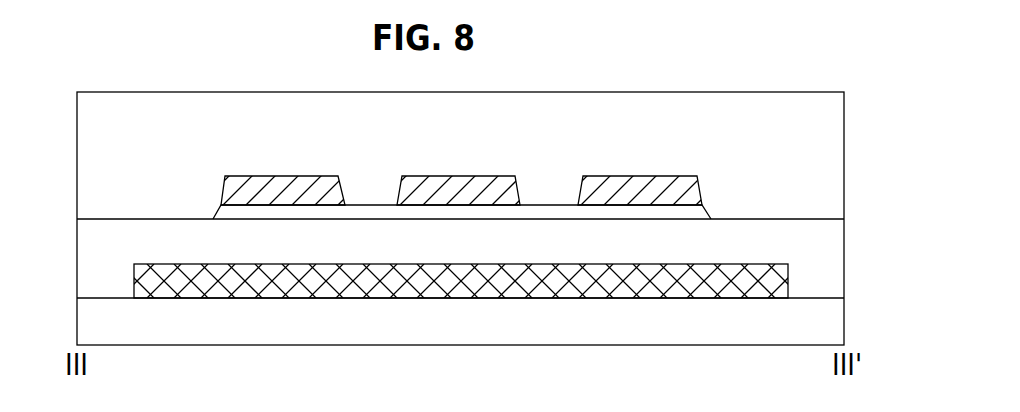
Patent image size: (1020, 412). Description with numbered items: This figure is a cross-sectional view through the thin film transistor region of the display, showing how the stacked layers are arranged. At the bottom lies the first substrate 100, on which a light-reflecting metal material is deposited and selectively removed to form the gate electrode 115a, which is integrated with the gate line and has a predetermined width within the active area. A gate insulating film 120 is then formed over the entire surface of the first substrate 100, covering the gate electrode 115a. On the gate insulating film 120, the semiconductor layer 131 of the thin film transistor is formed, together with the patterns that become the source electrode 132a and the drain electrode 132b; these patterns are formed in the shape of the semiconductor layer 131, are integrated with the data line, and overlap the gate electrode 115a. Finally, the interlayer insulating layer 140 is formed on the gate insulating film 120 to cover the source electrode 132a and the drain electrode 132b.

The first substrate 100 is at (826, 322).
The gate electrode 115a is at (735, 288).
The gate insulating film 120 is at (826, 233).
The semiconductor layer 131 is at (708, 216).
The source electrode 132a is at (283, 190).
The drain electrode 132b is at (462, 190).
The interlayer insulating layer 140 is at (826, 112).